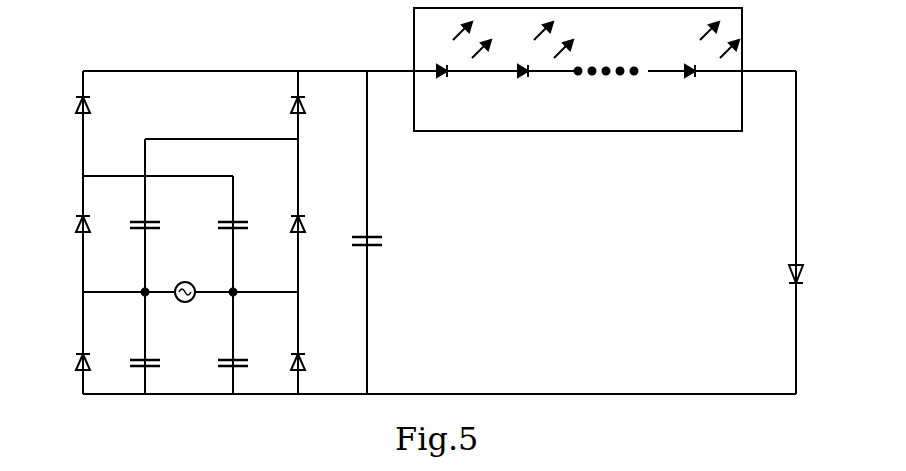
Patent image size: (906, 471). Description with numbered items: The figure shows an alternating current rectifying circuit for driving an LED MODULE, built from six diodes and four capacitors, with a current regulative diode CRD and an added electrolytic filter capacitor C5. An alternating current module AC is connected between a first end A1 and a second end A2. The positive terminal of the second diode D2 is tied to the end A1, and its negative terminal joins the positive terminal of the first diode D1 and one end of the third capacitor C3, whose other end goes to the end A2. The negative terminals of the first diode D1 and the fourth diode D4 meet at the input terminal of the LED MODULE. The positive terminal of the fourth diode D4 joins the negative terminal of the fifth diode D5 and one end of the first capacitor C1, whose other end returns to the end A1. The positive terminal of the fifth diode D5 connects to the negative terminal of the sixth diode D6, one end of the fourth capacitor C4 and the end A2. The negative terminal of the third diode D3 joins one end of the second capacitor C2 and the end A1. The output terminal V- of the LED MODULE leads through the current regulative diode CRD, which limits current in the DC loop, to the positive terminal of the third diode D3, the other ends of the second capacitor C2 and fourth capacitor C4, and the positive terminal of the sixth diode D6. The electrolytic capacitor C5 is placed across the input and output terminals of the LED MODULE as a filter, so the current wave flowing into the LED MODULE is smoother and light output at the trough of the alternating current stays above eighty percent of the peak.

The first diode D1 is at (99, 106).
The second diode D2 is at (99, 225).
The third diode D3 is at (99, 363).
The fourth diode D4 is at (314, 106).
The fifth diode D5 is at (314, 225).
The sixth diode D6 is at (314, 363).
The first capacitor C1 is at (159, 225).
The second capacitor C2 is at (159, 363).
The third capacitor C3 is at (247, 225).
The fourth capacitor C4 is at (247, 363).
The electrolytic capacitor C5 is at (380, 245).
The alternating current module AC is at (184, 305).
The current regulative diode CRD is at (769, 275).
The LED module LED MODULE is at (578, 69).
The output terminal V- is at (189, 407).
The one end of the alternating current module A1 is at (68, 301).
The other end of the alternating current module A2 is at (315, 301).